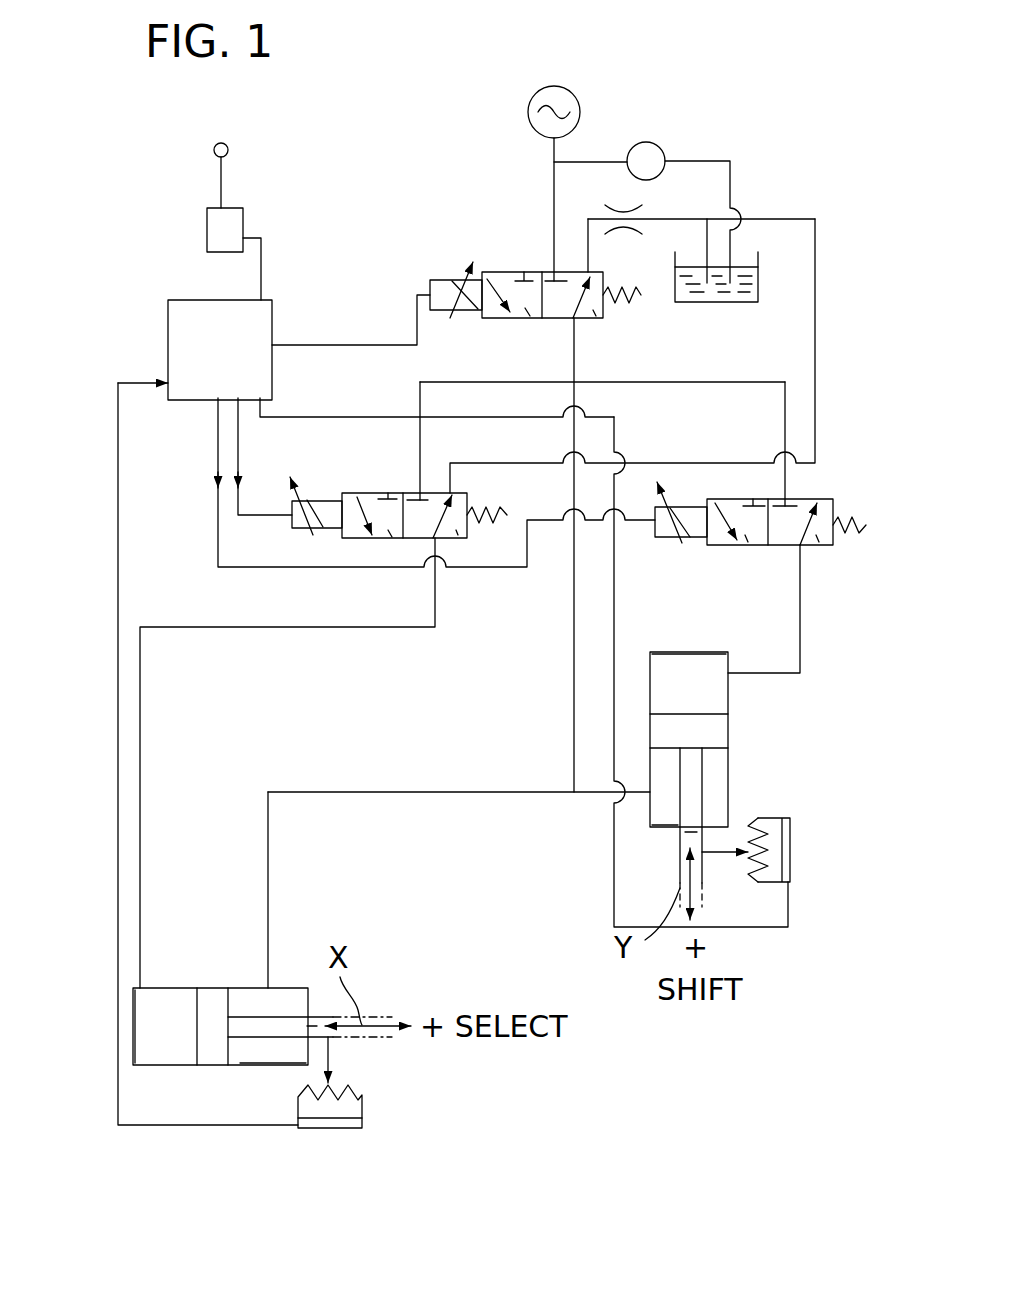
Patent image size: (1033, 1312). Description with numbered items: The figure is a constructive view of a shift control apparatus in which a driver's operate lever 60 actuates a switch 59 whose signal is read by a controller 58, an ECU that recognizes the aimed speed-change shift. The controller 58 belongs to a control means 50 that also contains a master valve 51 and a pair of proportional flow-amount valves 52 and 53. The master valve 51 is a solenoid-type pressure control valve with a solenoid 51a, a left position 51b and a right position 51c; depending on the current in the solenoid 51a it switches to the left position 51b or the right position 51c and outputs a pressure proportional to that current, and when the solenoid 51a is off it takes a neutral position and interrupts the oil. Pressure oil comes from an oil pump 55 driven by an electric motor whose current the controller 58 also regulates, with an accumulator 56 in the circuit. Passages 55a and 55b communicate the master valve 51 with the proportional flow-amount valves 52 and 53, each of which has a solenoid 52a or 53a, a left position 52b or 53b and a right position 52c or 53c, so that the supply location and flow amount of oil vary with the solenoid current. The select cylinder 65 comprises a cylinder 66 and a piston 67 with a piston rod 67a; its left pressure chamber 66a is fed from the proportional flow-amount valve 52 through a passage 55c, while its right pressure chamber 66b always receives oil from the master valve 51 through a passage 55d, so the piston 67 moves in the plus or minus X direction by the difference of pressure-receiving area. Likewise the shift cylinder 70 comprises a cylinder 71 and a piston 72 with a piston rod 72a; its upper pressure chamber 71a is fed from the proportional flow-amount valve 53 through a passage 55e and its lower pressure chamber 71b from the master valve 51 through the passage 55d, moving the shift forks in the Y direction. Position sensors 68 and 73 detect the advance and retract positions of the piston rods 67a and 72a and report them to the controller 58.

The control means 50 is at (142, 316).
The master valve 51 is at (515, 270).
The solenoid 51a is at (440, 282).
The left position 51b is at (530, 312).
The right position 51c is at (593, 312).
The proportional flow-amount valve 52 is at (375, 492).
The solenoid 52a is at (322, 503).
The left position 52b is at (392, 538).
The right position 52c is at (458, 538).
The proportional flow-amount valve 53 is at (773, 495).
The solenoid 53a is at (700, 544).
The left position 53b is at (748, 544).
The right position 53c is at (818, 545).
The oil pump 55 is at (668, 150).
The passage 55a is at (441, 380).
The passage 55b is at (700, 381).
The passage 55c is at (290, 628).
The passage 55d is at (573, 638).
The passage 55e is at (801, 628).
The accumulator 56 is at (581, 106).
The controller 58 is at (236, 384).
The switch 59 is at (207, 242).
The operate lever 60 is at (222, 178).
The select cylinder 65 is at (197, 1097).
The cylinder 66 is at (133, 1040).
The left pressure chamber 66a is at (157, 1000).
The right pressure chamber 66b is at (273, 1057).
The piston 67 is at (221, 1000).
The piston rod 67a is at (372, 1015).
The position sensor 68 is at (357, 1103).
The shift cylinder 70 is at (640, 690).
The cylinder 71 is at (672, 651).
The upper pressure chamber 71a is at (695, 655).
The lower pressure chamber 71b is at (660, 817).
The piston 72 is at (728, 722).
The piston rod 72a is at (680, 880).
The position sensor 73 is at (792, 853).